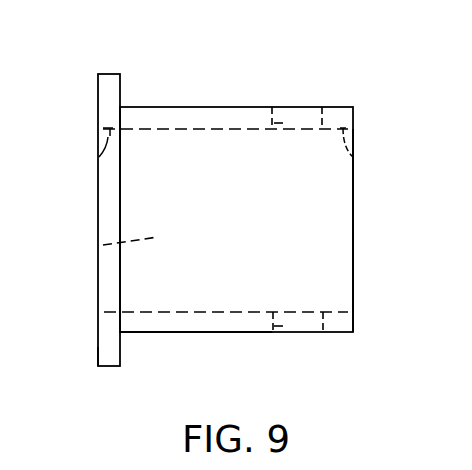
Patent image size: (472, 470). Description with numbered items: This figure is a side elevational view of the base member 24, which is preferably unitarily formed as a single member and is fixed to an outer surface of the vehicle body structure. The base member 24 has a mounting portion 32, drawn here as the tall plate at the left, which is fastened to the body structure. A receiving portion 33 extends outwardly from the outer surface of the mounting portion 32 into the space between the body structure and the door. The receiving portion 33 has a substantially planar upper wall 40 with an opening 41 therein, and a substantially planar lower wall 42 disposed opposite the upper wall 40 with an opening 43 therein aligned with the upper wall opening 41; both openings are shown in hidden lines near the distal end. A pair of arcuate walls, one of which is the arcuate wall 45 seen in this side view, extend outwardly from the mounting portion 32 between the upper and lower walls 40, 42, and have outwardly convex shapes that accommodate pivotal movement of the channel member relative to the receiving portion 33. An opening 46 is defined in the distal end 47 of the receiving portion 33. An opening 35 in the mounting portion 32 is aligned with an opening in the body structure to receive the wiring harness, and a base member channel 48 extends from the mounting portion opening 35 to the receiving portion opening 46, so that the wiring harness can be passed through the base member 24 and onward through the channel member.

The base member 24 is at (108, 74).
The upper wall 40 is at (189, 106).
The upper wall opening 41 is at (275, 123).
The lower wall opening 43 is at (290, 333).
The receiving portion opening 46 is at (358, 161).
The arcuate wall 45 is at (316, 211).
The distal end 47 is at (354, 275).
The mounting portion opening 35 is at (92, 161).
The base member channel 48 is at (99, 246).
The mounting portion 32 is at (97, 347).
The receiving portion 33 is at (175, 334).
The lower wall 42 is at (241, 334).